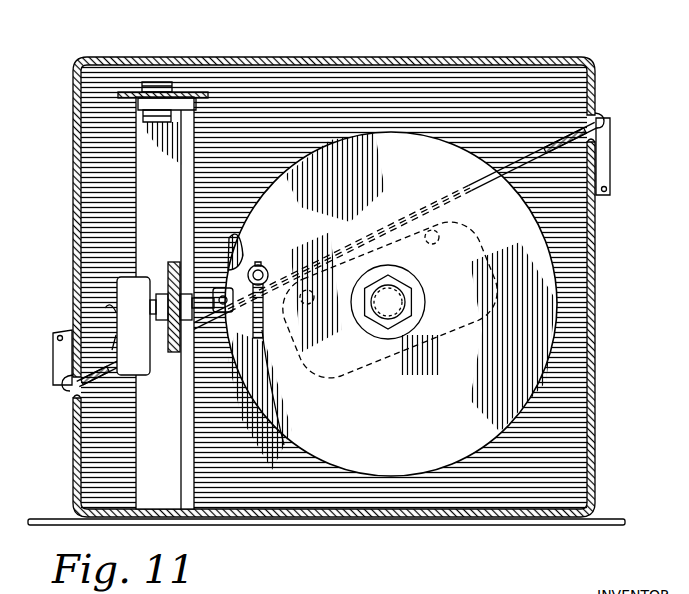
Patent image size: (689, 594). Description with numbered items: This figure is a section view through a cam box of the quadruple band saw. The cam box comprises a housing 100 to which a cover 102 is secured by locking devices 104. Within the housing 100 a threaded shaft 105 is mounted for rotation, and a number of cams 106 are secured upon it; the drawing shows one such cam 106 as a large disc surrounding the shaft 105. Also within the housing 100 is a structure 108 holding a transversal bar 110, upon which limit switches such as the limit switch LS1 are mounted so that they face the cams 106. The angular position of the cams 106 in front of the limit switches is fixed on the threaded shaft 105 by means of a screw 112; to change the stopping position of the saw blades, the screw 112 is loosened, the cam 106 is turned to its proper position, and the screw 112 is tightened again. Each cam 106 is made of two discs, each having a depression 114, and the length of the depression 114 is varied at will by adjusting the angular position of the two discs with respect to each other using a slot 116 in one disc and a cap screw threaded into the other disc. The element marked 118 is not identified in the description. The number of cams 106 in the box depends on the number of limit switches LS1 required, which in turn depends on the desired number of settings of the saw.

The housing 100 is at (592, 374).
The cover 102 is at (331, 78).
The locking devices 104 is at (605, 178).
The shaft 105 is at (398, 300).
The cam 106 is at (330, 446).
The structure 108 is at (152, 148).
The transversal bar 110 is at (173, 268).
The screw 112 is at (386, 330).
The depression 114 is at (250, 259).
The slot 116 is at (277, 441).
The cam lug 118 is at (262, 255).
The limit switch LS1 is at (125, 310).